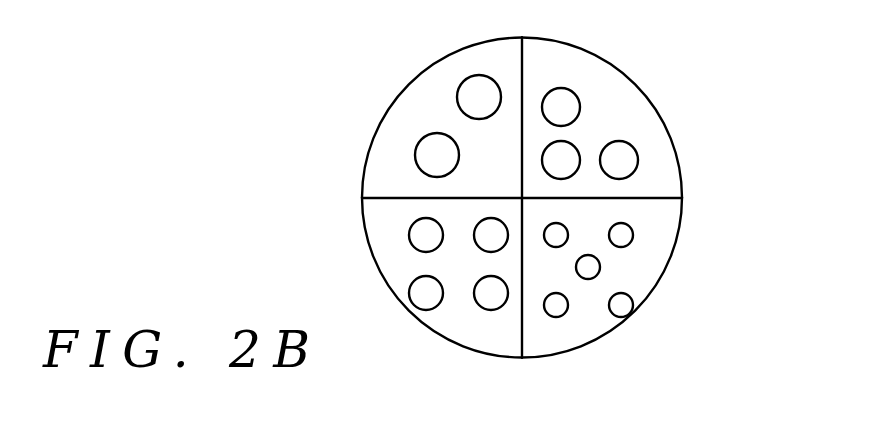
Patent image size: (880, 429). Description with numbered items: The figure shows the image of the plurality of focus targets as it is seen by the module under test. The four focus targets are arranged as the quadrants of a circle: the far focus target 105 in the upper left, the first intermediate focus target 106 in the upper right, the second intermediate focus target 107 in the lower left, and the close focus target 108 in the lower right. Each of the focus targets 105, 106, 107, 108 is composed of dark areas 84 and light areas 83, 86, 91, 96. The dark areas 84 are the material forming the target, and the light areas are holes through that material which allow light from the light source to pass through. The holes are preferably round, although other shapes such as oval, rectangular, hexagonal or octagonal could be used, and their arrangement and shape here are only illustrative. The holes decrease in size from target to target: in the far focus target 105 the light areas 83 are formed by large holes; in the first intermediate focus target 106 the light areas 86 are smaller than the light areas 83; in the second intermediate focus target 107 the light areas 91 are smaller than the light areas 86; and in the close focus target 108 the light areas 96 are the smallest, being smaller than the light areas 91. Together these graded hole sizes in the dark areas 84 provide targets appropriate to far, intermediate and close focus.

The light areas 83 is at (478, 95).
The light areas 86 is at (560, 107).
The dark areas 84 is at (370, 177).
The light areas 91 is at (425, 293).
The light areas 96 is at (621, 305).
The far focus target 105 is at (378, 127).
The first intermediate focus target 106 is at (652, 102).
The second intermediate focus target 107 is at (378, 275).
The close focus target 108 is at (652, 283).